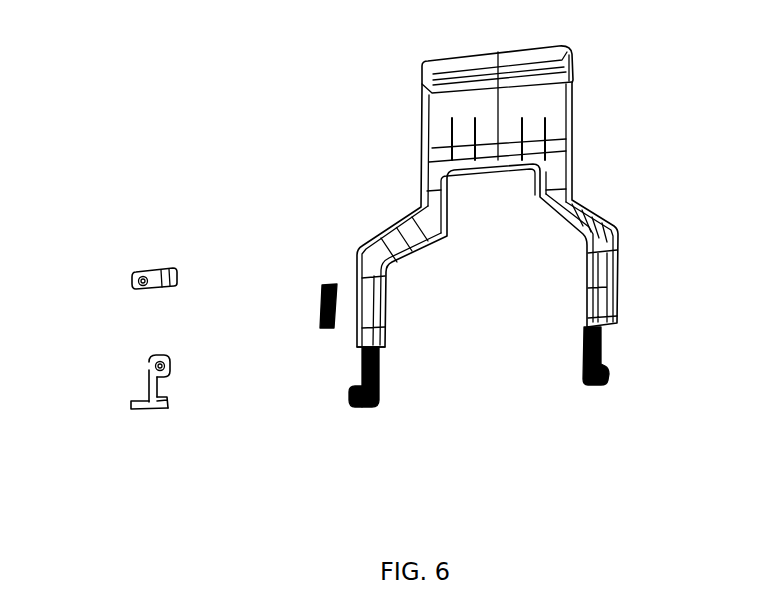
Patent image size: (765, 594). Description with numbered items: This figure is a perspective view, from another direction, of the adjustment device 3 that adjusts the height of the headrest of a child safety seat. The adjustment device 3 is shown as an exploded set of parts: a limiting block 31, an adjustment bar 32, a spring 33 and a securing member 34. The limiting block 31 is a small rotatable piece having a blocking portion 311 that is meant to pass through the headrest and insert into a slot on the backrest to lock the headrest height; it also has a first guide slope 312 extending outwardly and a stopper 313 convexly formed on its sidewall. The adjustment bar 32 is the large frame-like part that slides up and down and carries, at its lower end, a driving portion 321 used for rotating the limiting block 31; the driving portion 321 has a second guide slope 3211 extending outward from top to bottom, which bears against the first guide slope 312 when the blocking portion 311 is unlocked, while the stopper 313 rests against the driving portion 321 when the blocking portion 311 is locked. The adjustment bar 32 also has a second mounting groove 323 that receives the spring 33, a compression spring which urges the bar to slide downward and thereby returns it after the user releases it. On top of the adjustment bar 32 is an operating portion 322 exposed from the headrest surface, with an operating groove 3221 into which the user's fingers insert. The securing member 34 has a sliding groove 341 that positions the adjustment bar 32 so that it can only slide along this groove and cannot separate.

The adjustment device 3 is at (174, 114).
The limiting block 31 is at (152, 411).
The blocking portion 311 is at (132, 407).
The first guide slope 312 is at (165, 373).
The stopper 313 is at (168, 405).
The adjustment bar 32 is at (617, 258).
The driving portion 321 is at (363, 400).
The second guide slope 3211 is at (360, 388).
The operating portion 322 is at (422, 80).
The operating groove 3221 is at (573, 73).
The second mounting groove 323 is at (372, 323).
The spring 33 is at (330, 280).
The securing member 34 is at (130, 278).
The sliding groove 341 is at (165, 268).